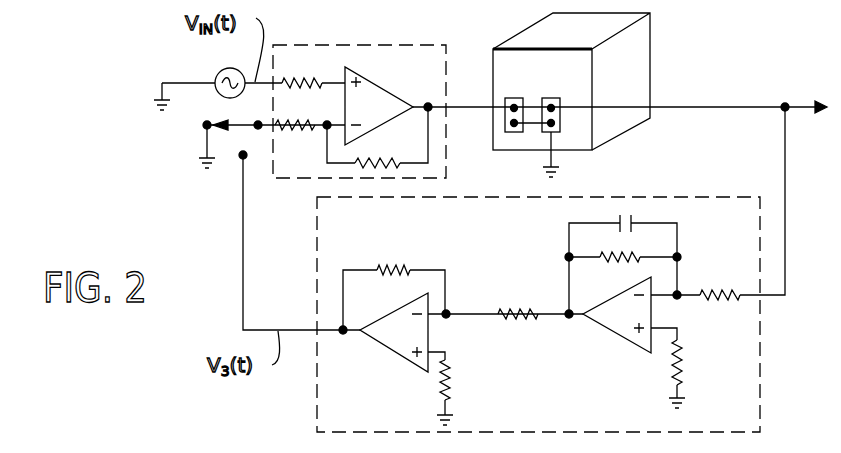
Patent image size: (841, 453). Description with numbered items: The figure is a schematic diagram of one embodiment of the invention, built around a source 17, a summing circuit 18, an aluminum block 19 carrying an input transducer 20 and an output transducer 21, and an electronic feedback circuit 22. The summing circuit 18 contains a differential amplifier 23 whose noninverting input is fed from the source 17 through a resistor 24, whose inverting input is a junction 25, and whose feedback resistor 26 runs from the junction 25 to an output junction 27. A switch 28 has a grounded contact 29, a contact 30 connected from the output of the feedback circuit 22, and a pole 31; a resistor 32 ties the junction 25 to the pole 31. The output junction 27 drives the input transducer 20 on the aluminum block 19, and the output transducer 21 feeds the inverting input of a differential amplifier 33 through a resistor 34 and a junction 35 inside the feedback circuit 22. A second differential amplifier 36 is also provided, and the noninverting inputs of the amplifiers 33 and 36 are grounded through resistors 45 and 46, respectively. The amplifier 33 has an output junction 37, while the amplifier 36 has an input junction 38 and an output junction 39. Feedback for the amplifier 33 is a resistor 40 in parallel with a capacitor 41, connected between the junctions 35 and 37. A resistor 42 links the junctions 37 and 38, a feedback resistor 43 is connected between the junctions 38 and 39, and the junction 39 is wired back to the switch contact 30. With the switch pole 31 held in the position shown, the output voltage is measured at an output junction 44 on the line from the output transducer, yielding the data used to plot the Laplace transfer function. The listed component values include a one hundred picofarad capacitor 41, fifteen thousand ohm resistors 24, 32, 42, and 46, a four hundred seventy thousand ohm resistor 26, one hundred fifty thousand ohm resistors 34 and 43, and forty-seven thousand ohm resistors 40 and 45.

The source 17 is at (224, 73).
The summing circuit 18 is at (356, 40).
The aluminum block 19 is at (637, 55).
The input transducer 20 is at (514, 97).
The output transducer 21 is at (551, 97).
The electronic feedback circuit 22 is at (316, 410).
The differential amplifier 23 is at (373, 84).
The resistor 24 is at (312, 78).
The junction 25 is at (326, 130).
The feedback resistor 26 is at (368, 161).
The output junction 27 is at (430, 112).
The switch 28 is at (226, 146).
The grounded contact 29 is at (207, 121).
The contact 30 is at (241, 160).
The pole 31 is at (238, 128).
The resistor 32 is at (301, 131).
The differential amplifier 33 is at (616, 340).
The resistor 34 is at (718, 292).
The junction 35 is at (678, 292).
The differential amplifier 36 is at (401, 358).
The output junction 37 is at (568, 318).
The input junction 38 is at (447, 310).
The output junction 39 is at (343, 335).
The resistor 40 is at (620, 256).
The capacitor 41 is at (618, 222).
The resistor 42 is at (516, 308).
The feedback resistor 43 is at (395, 265).
The output junction 44 is at (785, 103).
The resistor 45 is at (682, 360).
The resistor 46 is at (450, 385).